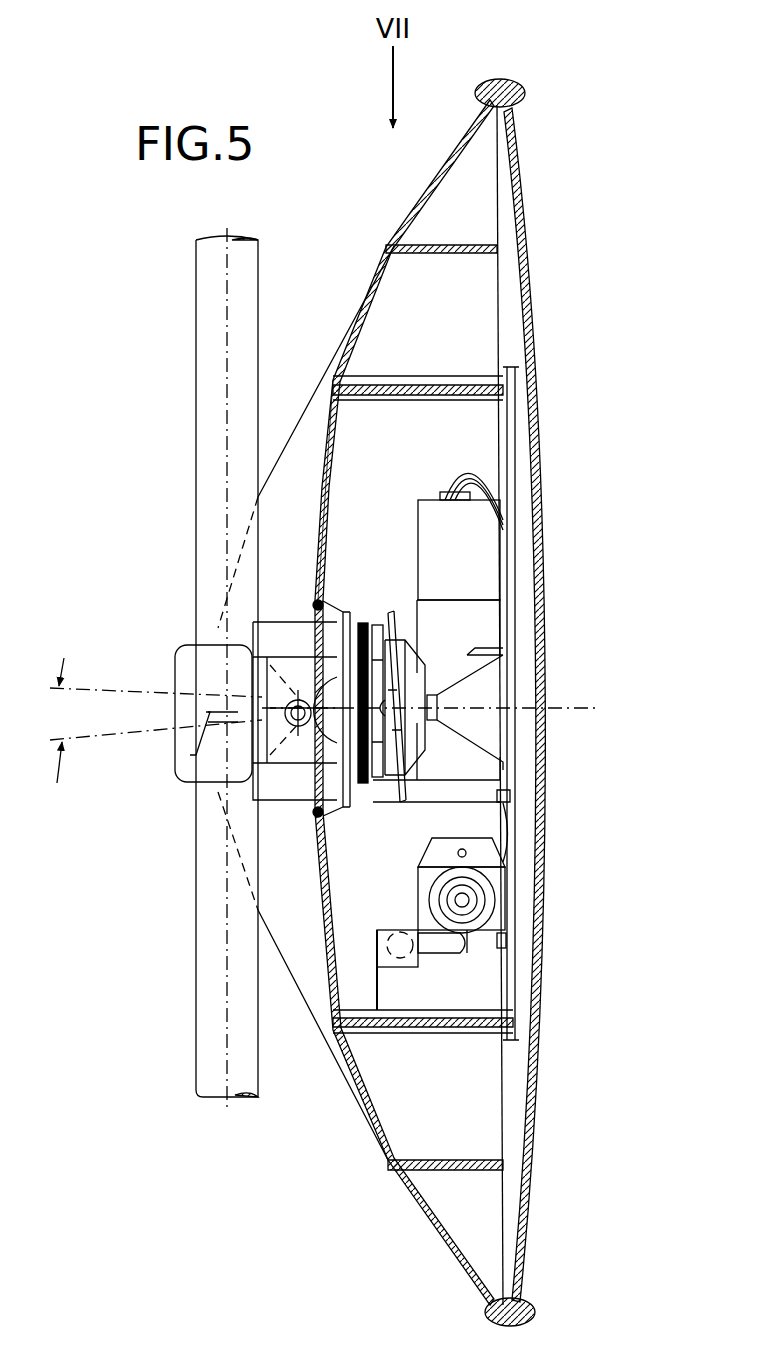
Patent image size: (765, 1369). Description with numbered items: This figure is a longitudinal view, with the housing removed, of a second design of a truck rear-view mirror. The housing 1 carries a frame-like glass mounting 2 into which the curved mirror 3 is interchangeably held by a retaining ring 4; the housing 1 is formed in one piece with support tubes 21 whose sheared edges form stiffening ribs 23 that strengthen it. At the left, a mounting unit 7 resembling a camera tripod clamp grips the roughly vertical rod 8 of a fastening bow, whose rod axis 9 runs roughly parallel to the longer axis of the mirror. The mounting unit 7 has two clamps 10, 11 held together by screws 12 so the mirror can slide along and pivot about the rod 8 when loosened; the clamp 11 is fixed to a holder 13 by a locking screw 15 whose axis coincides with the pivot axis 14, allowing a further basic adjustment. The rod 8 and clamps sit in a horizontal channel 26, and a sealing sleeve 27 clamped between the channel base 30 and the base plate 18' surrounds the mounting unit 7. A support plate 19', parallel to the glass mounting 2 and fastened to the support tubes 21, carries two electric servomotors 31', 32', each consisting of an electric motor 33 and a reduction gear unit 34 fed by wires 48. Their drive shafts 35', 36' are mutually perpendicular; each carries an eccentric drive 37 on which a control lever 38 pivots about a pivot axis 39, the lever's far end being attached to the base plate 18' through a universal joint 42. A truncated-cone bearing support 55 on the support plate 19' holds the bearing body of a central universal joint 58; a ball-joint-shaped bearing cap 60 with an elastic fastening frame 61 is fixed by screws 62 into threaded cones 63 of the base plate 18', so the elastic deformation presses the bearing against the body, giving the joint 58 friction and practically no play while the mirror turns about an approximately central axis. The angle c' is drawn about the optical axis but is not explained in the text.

The housing 1 is at (372, 236).
The glass mounting 2 is at (497, 78).
The curved mirror 3 is at (532, 237).
The retaining ring 4 is at (526, 93).
The mounting unit 7 is at (170, 660).
The rod 8 is at (212, 296).
The rod axis 9 is at (225, 350).
The clamp 10 is at (190, 656).
The clamp 11 is at (283, 664).
The screws 12 is at (192, 756).
The holder 13 is at (343, 610).
The pivot axis 14 is at (305, 727).
The locking screw 15 is at (304, 700).
The base plate 18' is at (370, 640).
The support plate 19' is at (559, 703).
The support tubes 21 is at (395, 384).
The stiffening ribs 23 is at (443, 390).
The horizontal channel 26 is at (293, 430).
The sealing sleeve 27 is at (343, 818).
The base of the longitudinal channel 30 is at (320, 486).
The electric servomotor 31' is at (433, 456).
The electric servomotor 32' is at (485, 971).
The electric motor 33 is at (484, 520).
The reduction gear unit 34 is at (485, 615).
The drive shaft 35' is at (533, 665).
The drive shaft 36' is at (524, 861).
The eccentric drive 37 is at (470, 930).
The control lever 38 is at (440, 953).
The pivot axis 39 is at (466, 952).
The universal joint 42 is at (397, 960).
The circuit paths 48 is at (472, 458).
The bearing support 55 is at (498, 740).
The universal joint 58 is at (440, 708).
The bearing cap 60 is at (413, 674).
The elastic fastening frame 61 is at (402, 758).
The screws 62 is at (417, 604).
The threaded cones 63 is at (383, 622).
The beam angle c' is at (155, 720).